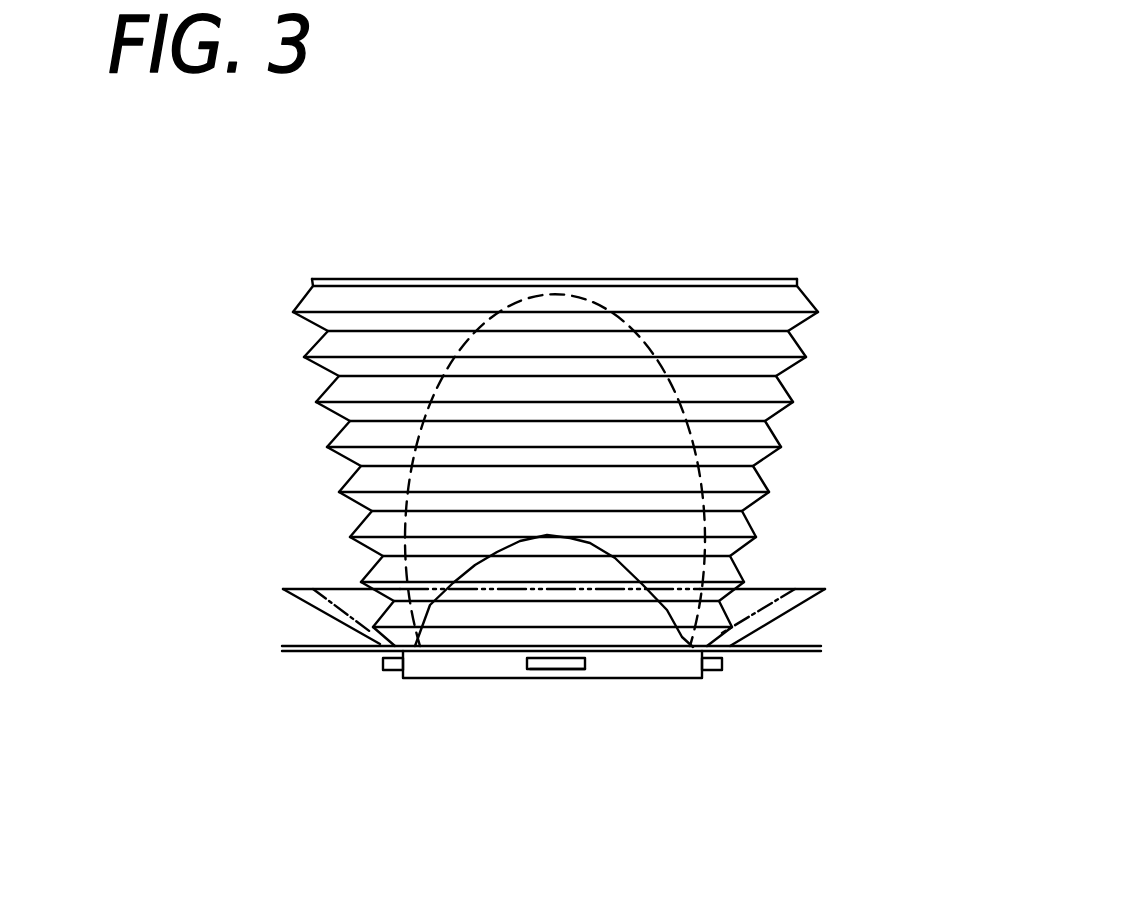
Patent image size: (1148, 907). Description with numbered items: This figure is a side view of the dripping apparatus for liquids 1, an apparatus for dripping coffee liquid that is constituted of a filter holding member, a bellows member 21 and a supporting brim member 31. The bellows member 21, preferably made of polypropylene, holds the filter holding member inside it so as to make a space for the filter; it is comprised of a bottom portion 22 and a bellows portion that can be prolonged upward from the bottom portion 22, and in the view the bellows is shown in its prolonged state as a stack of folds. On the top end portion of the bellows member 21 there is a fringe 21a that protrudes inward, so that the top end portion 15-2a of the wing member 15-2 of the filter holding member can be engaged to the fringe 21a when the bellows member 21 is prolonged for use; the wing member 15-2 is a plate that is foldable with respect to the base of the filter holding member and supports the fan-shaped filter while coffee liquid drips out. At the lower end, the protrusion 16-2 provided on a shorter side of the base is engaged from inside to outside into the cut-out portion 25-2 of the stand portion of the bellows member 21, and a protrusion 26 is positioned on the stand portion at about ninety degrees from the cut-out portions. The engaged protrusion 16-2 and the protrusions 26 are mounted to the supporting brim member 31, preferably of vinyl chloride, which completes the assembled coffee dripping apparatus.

The dripping apparatus for liquids 1 is at (663, 258).
The bellows member 21 is at (790, 420).
The fringe 21a is at (797, 287).
The wing member 15-2 is at (680, 528).
The top end portion of wing member 15-2a is at (540, 297).
The protrusion 16-2 is at (557, 669).
The bottom portion 22 is at (450, 680).
The cut-out portion 25-2 is at (525, 663).
The protrusion 26 is at (385, 669).
The supporting brim member 31 is at (785, 660).